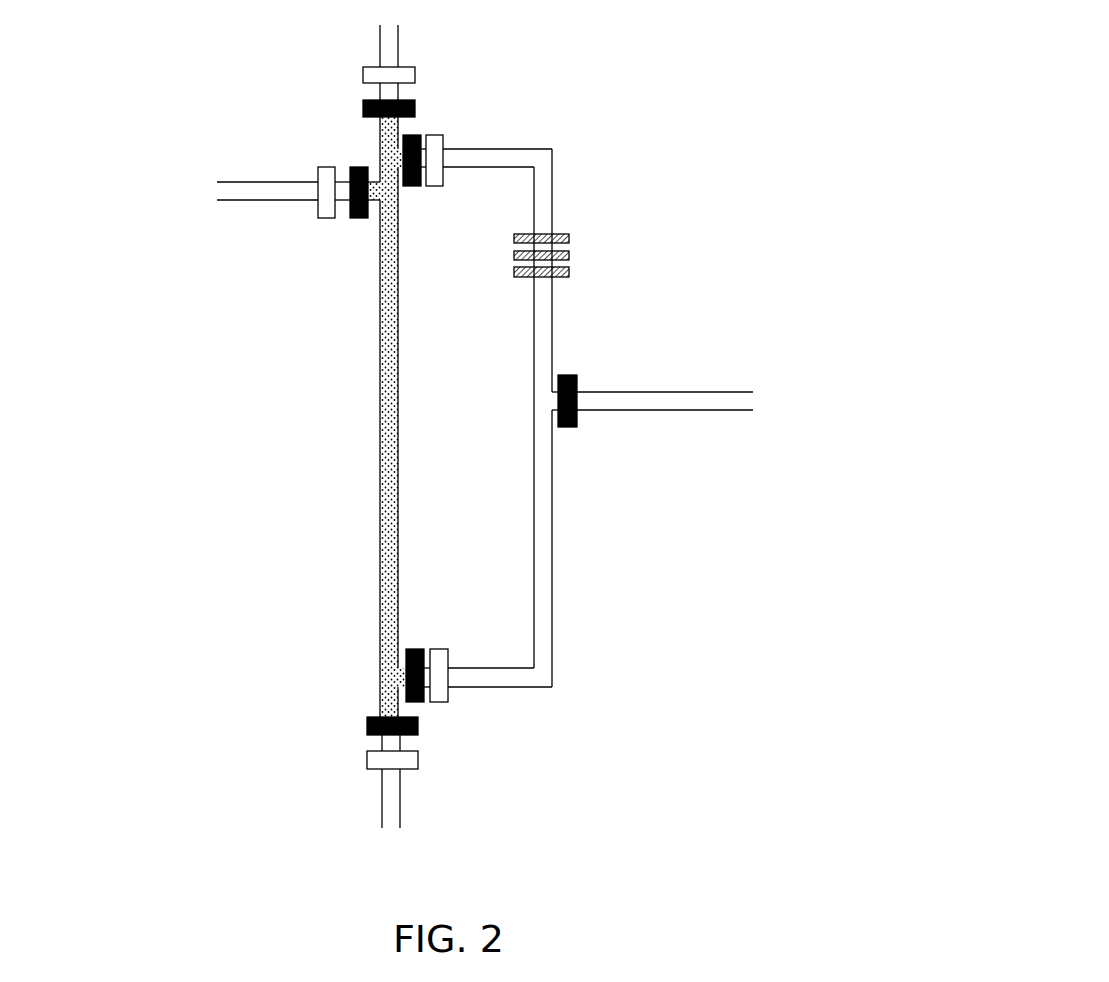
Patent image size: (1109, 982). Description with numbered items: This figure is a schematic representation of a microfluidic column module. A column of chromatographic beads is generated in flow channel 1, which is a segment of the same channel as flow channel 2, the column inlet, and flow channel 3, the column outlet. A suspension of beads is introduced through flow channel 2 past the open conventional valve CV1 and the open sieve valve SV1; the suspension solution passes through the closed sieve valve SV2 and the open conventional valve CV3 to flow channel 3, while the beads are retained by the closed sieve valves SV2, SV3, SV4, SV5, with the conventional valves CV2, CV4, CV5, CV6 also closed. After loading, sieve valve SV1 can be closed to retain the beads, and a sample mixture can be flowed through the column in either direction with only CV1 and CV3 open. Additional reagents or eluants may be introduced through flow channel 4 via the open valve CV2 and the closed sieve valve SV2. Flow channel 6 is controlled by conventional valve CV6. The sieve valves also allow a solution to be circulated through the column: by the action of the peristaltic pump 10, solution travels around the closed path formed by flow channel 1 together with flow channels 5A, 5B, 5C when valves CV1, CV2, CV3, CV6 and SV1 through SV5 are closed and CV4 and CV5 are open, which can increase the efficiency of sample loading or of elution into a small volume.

The flow channel 1 is at (380, 435).
The flow channel 2 is at (398, 41).
The flow channel 3 is at (383, 808).
The flow channel 4 is at (240, 182).
The flow channel 5A is at (482, 167).
The flow channel 5B is at (534, 325).
The flow channel 5C is at (486, 668).
The flow channel 6 is at (650, 410).
The peristaltic pump 10 is at (590, 244).
The conventional valve CV1 is at (363, 75).
The conventional valve CV2 is at (325, 218).
The conventional valve CV3 is at (367, 760).
The conventional valve CV4 is at (448, 697).
The conventional valve CV5 is at (443, 140).
The conventional valve CV6 is at (577, 383).
The sieve valve SV1 is at (363, 108).
The sieve valve SV2 is at (358, 218).
The sieve valve SV3 is at (367, 725).
The sieve valve SV4 is at (418, 702).
The sieve valve SV5 is at (412, 135).